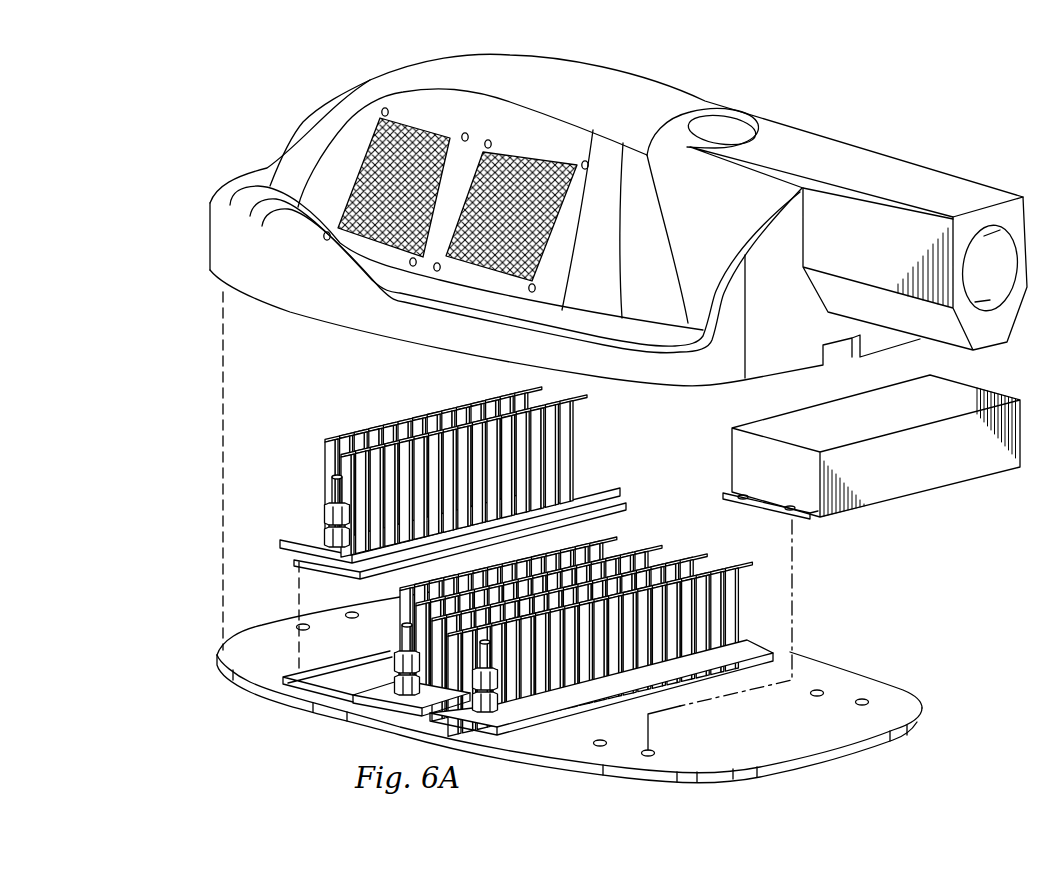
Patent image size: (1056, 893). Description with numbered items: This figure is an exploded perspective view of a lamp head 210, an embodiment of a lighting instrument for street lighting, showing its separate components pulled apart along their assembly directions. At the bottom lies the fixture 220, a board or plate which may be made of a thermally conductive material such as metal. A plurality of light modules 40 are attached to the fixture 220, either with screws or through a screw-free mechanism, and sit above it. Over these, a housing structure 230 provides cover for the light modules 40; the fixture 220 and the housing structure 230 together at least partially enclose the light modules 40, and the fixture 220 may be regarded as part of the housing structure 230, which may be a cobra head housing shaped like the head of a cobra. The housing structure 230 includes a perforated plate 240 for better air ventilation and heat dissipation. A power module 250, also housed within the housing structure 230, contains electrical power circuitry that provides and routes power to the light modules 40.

The lamp head 210 is at (237, 114).
The fixture 220 is at (850, 684).
The housing structure 230 is at (618, 196).
The perforated plate 240 is at (530, 148).
The power module 250 is at (937, 478).
The light modules 40 is at (344, 411).